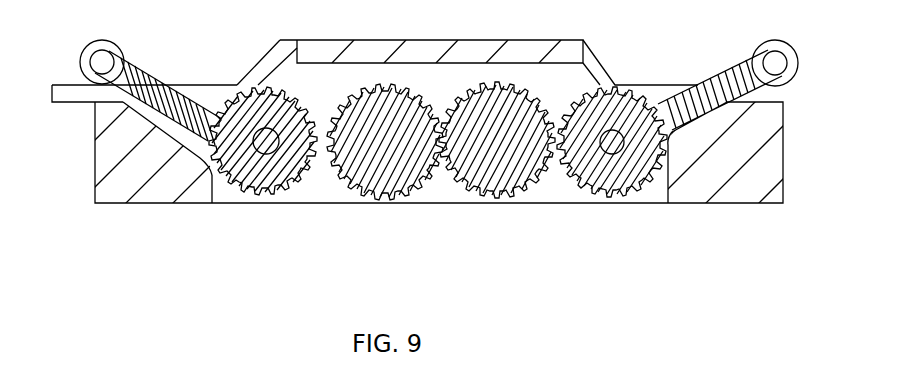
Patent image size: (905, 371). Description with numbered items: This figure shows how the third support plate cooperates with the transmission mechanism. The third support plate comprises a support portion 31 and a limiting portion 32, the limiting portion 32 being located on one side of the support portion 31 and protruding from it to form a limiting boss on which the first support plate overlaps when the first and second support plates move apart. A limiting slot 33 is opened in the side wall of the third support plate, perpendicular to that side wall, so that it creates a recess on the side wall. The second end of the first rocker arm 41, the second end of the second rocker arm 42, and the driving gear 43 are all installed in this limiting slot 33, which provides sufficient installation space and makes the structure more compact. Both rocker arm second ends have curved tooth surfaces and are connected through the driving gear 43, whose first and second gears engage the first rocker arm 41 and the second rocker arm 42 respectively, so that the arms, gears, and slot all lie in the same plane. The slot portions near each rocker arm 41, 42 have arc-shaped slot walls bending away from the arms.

The support portion 31 is at (150, 155).
The limiting portion 32 is at (490, 55).
The limiting slot 33 is at (327, 183).
The first rocker arm 41 is at (128, 75).
The second rocker arm 42 is at (712, 97).
The driving gear 43 is at (372, 117).